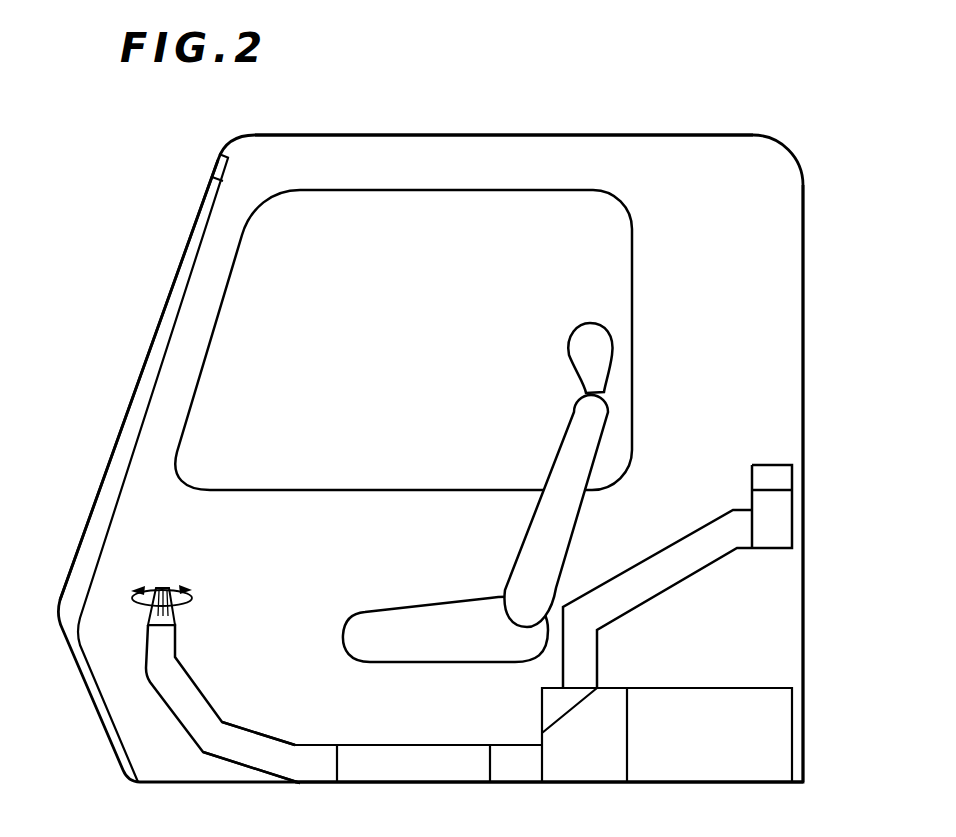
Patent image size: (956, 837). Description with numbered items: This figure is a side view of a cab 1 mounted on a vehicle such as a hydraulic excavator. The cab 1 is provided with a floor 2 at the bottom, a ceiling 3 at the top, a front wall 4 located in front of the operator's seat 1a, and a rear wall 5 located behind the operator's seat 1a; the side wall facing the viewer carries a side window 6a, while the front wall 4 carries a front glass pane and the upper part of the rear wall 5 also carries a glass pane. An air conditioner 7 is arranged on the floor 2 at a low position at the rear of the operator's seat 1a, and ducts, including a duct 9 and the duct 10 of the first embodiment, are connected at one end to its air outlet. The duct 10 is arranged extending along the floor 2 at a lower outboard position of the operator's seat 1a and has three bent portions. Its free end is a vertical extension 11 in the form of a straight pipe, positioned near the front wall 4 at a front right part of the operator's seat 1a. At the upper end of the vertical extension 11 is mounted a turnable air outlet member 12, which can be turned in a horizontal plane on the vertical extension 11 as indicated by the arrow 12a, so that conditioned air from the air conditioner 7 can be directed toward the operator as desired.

The cab 1 is at (614, 131).
The operator's seat 1a is at (440, 665).
The floor 2 is at (602, 785).
The ceiling 3 is at (478, 135).
The front wall 4 is at (131, 400).
The rear wall 5 is at (803, 278).
The side window 6a is at (338, 189).
The air conditioner 7 is at (735, 760).
The duct 9 is at (700, 556).
The duct 10 is at (262, 757).
The vertical extension 11 is at (143, 660).
The air outlet member 12 is at (150, 617).
The arrow 12a is at (133, 592).